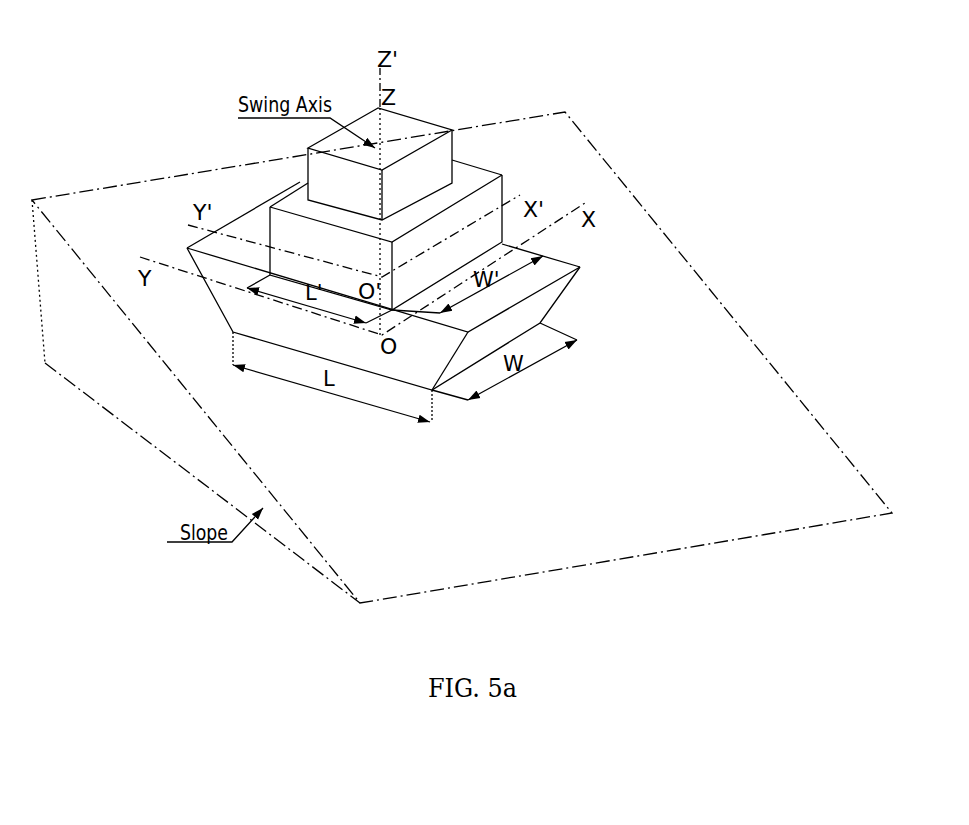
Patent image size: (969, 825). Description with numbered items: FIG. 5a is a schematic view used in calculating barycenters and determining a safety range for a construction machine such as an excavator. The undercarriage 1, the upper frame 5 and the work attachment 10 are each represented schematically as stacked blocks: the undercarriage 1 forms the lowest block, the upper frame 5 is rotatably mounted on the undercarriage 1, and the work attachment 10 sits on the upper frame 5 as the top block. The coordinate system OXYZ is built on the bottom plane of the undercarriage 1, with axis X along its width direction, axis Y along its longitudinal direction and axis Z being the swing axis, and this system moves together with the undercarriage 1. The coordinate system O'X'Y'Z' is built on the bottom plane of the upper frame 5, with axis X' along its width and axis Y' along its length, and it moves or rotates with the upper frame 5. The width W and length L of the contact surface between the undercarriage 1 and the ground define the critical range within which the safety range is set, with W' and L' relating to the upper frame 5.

The undercarriage 1 is at (575, 295).
The upper frame 5 is at (510, 190).
The work attachment 10 is at (458, 150).